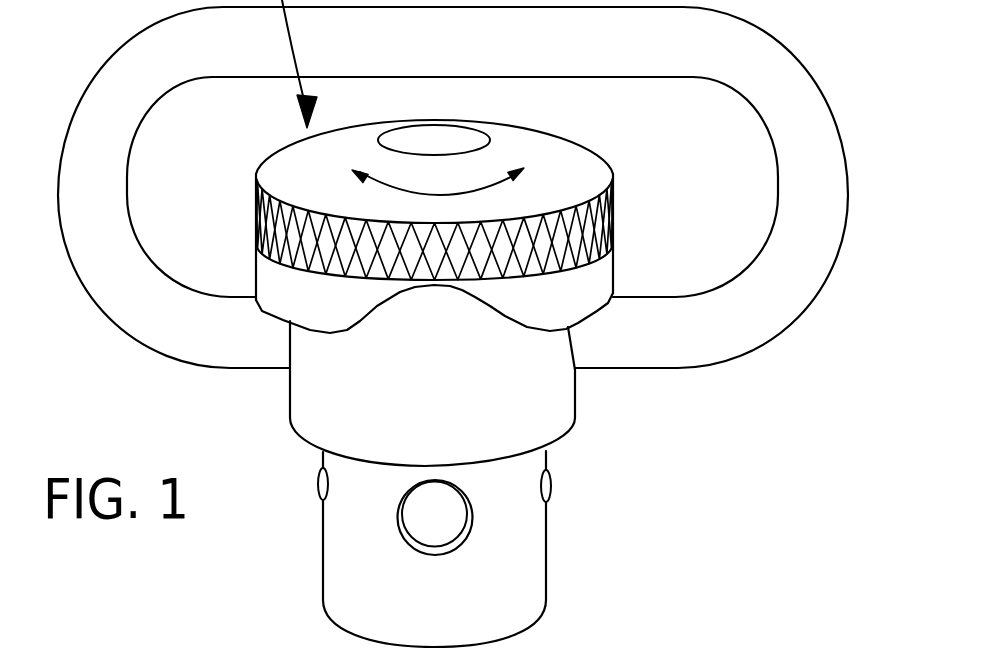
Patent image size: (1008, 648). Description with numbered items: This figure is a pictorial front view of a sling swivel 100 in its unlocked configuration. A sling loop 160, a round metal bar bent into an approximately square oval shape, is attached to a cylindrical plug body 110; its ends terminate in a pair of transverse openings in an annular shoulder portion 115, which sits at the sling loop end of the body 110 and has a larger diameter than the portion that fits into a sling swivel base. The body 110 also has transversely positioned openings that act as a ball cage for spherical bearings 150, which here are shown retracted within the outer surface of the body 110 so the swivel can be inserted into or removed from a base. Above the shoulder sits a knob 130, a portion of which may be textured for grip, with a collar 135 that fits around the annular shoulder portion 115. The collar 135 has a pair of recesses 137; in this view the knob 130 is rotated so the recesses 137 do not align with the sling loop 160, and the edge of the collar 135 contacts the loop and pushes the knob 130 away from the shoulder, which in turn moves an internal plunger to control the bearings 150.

The sling swivel 100 is at (482, 323).
The body 110 is at (533, 563).
The annular shoulder portion 115 is at (303, 410).
The knob 130 is at (547, 157).
The collar 135 is at (491, 310).
The recesses 137 is at (443, 302).
The bearings 150 is at (435, 522).
The sling loop 160 is at (782, 77).